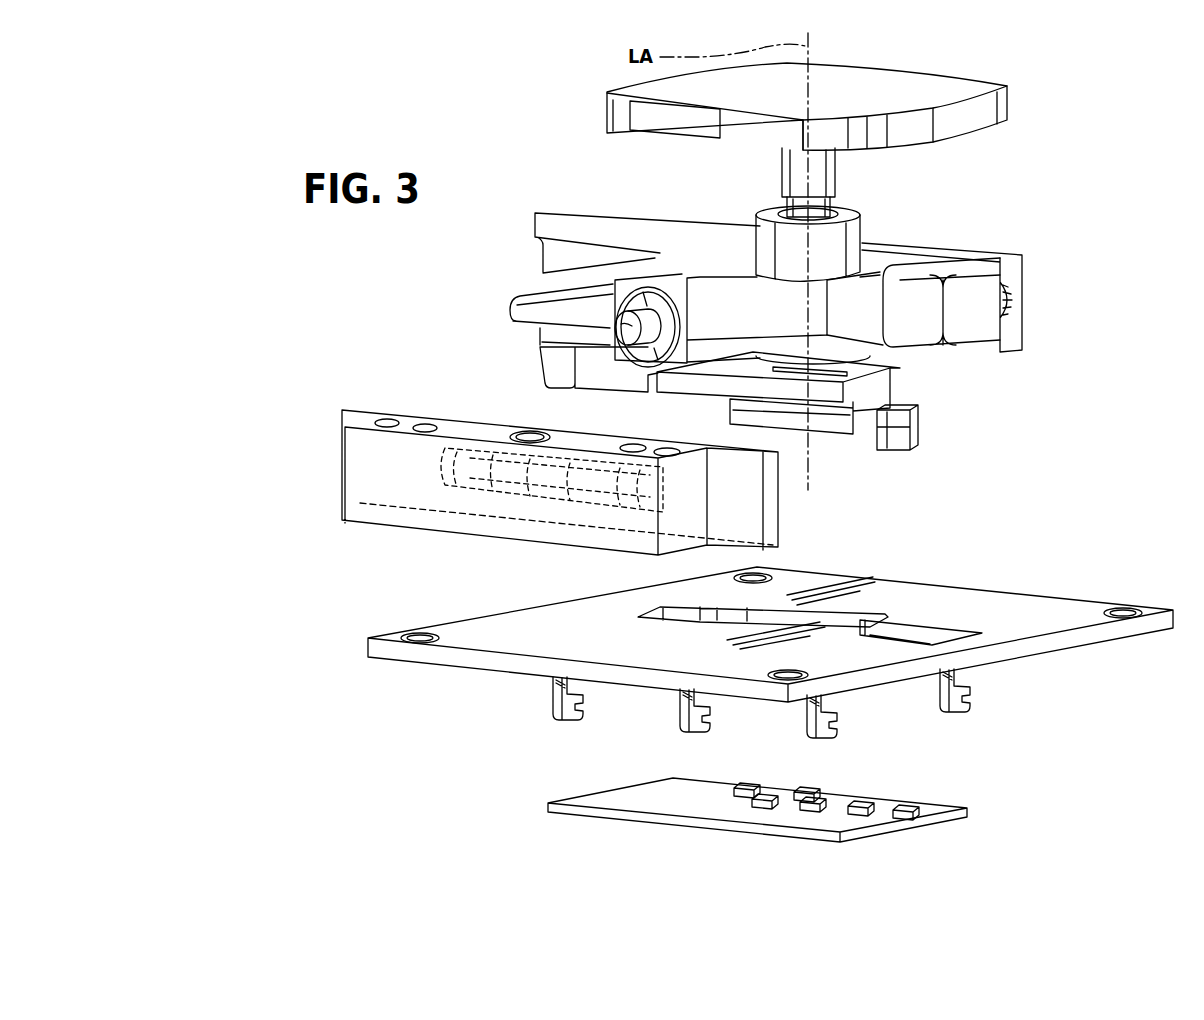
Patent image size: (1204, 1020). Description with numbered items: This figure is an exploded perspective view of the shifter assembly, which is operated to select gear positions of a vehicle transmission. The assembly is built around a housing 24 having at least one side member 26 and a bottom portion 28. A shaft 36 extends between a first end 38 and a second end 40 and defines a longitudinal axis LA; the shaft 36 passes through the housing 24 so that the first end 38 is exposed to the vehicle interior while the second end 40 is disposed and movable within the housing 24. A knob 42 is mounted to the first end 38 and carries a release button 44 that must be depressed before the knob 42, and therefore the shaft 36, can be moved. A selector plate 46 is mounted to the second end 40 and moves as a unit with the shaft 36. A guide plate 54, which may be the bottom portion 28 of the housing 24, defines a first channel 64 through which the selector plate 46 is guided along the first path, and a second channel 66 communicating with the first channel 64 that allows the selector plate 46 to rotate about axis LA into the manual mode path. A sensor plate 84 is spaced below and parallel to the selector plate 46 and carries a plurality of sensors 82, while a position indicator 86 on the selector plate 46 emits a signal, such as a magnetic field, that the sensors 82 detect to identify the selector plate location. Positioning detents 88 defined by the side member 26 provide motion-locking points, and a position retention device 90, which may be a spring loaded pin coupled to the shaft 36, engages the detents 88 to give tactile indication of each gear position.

The housing 24 is at (360, 655).
The side member 26 is at (1010, 330).
The bottom portion 28 is at (1048, 613).
The shaft 36 is at (825, 207).
The first end 38 is at (770, 184).
The second end 40 is at (880, 356).
The knob 42 is at (890, 86).
The release button 44 is at (667, 122).
The selector plate 46 is at (883, 388).
The guide plate 54 is at (908, 608).
The first channel 64 is at (932, 636).
The second channel 66 is at (853, 615).
The sensors 82 is at (773, 789).
The sensor plate 84 is at (870, 830).
The position indicator 86 is at (915, 437).
The positioning detents 88 is at (497, 495).
The position retention device 90 is at (620, 331).